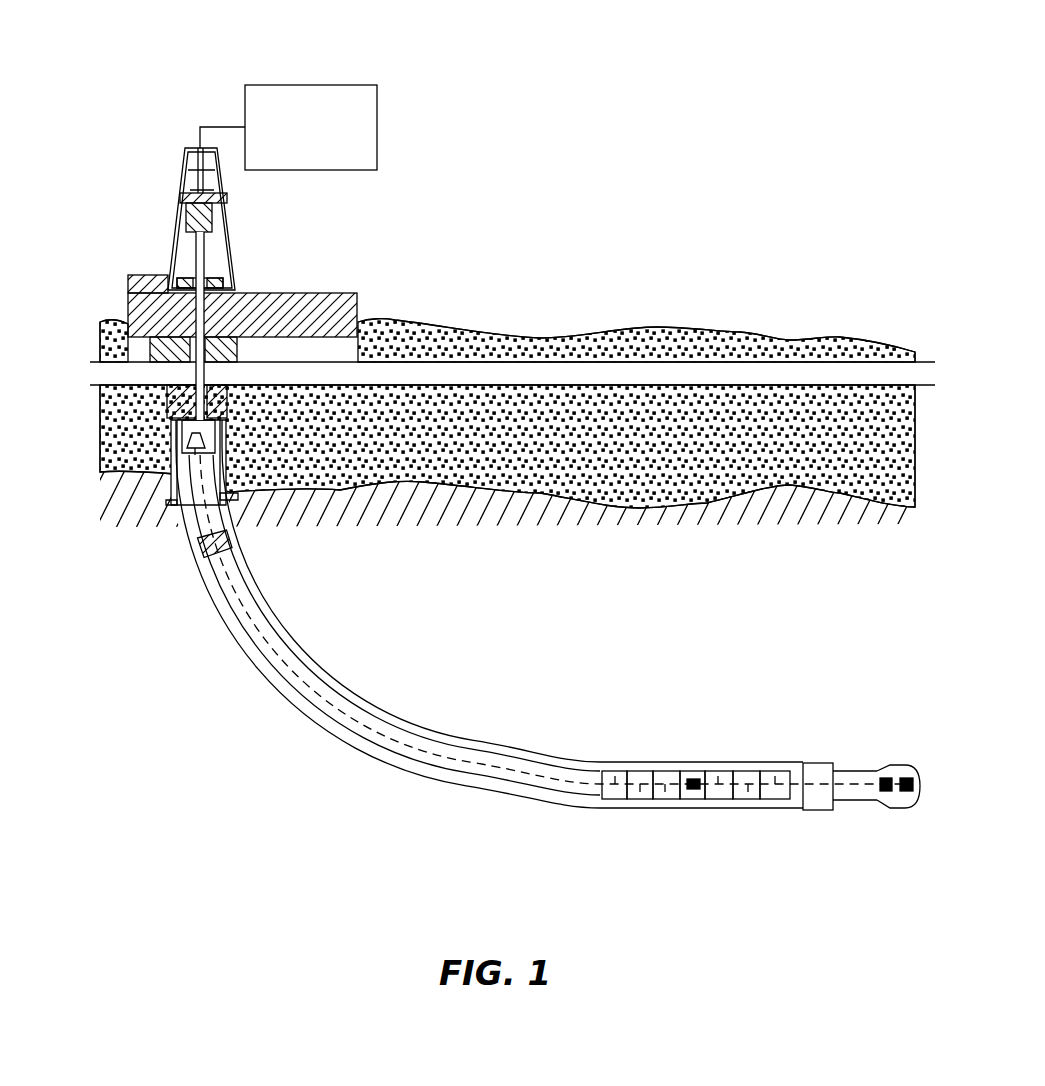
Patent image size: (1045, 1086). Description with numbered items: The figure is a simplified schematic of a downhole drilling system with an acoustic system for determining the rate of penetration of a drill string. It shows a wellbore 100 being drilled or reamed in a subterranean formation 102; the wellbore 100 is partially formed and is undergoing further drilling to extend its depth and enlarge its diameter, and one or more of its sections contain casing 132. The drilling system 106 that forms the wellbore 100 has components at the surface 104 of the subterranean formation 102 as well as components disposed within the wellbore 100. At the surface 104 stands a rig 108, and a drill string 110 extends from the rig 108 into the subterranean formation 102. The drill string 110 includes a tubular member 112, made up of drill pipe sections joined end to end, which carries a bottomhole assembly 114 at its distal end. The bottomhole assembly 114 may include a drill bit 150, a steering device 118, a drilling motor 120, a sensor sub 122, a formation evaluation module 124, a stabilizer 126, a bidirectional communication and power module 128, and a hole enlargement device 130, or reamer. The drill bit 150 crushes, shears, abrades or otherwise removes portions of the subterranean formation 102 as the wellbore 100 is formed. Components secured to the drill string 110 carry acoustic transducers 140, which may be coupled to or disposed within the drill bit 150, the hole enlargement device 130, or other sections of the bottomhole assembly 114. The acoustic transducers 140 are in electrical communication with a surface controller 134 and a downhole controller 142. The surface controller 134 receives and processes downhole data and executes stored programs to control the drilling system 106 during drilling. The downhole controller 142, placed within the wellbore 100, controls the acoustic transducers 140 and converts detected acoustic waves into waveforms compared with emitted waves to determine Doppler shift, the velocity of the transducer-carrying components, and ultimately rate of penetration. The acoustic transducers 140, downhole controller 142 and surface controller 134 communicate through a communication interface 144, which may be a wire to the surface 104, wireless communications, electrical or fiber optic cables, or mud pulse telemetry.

The wellbore 100 is at (472, 425).
The subterranean formation 102 is at (573, 592).
The surface 104 is at (100, 348).
The drilling system 106 is at (137, 176).
The rig 108 is at (213, 278).
The drill string 110 is at (250, 613).
The tubular member 112 is at (242, 572).
The bottomhole assembly 114 is at (740, 817).
The steering device 118 is at (718, 771).
The drilling motor 120 is at (748, 771).
The sensor sub 122 is at (693, 790).
The formation evaluation module 124 is at (665, 790).
The stabilizer 126 is at (640, 790).
The bidirectional communication and power module 128 is at (612, 790).
The hole enlargement device 130 is at (813, 763).
The casing 132 is at (167, 450).
The surface controller 134 is at (282, 85).
The acoustic transducers 140 is at (693, 779).
The downhole controller 142 is at (775, 771).
The communication interface 144 is at (218, 127).
The drill bit 150 is at (902, 765).